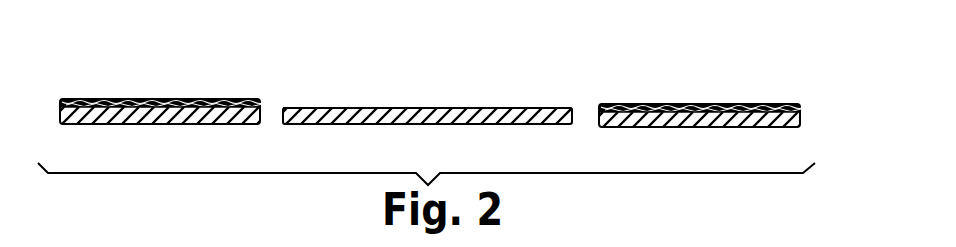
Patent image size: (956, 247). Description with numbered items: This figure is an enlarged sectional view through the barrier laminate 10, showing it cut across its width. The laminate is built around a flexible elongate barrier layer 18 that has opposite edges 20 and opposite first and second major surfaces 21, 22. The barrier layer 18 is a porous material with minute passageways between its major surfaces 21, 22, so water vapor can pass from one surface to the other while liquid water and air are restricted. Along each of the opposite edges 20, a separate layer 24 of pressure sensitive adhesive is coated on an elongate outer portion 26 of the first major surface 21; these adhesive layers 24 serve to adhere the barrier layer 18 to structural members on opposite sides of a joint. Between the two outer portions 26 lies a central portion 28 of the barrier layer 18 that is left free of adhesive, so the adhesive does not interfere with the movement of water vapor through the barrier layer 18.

The barrier laminate 10 is at (424, 80).
The barrier layer 18 is at (207, 96).
The opposite edges 20 is at (60, 117).
The first major surface 21 is at (113, 99).
The second major surface 22 is at (382, 126).
The layer of pressure sensitive adhesive 24 is at (158, 99).
The elongate outer portions 26 is at (175, 125).
The central portion 28 is at (318, 107).